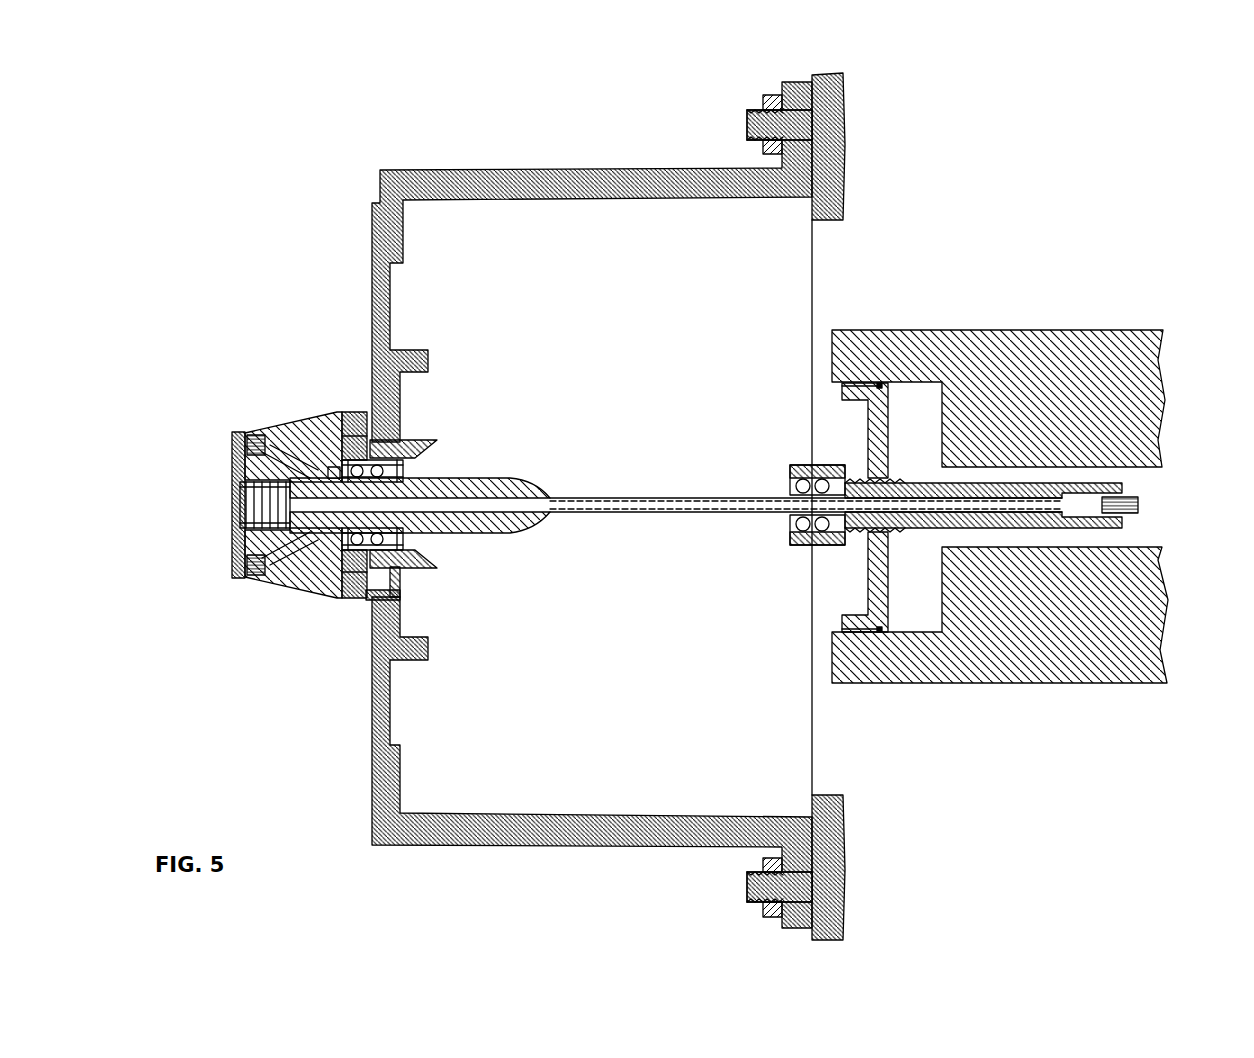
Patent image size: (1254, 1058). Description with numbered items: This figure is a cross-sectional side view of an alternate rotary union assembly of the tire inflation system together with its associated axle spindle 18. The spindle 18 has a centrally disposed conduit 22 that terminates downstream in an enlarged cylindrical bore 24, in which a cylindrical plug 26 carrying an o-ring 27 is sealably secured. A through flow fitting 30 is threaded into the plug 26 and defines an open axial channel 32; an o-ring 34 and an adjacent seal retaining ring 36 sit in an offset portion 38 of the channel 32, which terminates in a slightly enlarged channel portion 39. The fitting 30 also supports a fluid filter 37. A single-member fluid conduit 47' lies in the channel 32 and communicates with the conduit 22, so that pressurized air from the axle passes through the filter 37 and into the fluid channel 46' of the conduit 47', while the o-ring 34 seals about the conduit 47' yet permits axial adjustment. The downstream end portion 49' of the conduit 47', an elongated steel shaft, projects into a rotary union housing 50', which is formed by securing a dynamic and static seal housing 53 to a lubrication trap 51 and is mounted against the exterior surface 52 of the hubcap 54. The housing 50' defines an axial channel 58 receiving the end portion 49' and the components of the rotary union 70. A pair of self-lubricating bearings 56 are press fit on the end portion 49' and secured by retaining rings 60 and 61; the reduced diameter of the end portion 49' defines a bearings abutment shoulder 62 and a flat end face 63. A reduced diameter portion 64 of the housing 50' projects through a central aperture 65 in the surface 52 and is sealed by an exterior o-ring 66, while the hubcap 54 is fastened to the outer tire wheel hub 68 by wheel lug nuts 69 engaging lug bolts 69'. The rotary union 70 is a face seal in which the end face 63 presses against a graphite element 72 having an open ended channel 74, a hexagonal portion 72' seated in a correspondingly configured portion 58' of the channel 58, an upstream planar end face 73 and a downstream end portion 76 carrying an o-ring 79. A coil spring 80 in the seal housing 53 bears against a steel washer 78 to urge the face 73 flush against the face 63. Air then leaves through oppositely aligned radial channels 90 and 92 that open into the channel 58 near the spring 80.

The axle spindle 18 is at (1092, 345).
The conduit 22 is at (1063, 540).
The cylindrical bore 24 is at (935, 410).
The cylindrical plug 26 is at (890, 408).
The o-ring 27 is at (879, 383).
The through flow fitting 30 is at (840, 485).
The axial channel 32 is at (1087, 522).
The o-ring 34 is at (815, 465).
The seal retaining ring 36 is at (840, 515).
The fluid filter 37 is at (1140, 508).
The offset portion 38 is at (800, 512).
The enlarged channel portion 39 is at (845, 500).
The fluid channel 46' is at (806, 529).
The fluid conduit 47' is at (806, 477).
The downstream end portion 49' is at (420, 483).
The rotary union housing 50' is at (285, 316).
The lubrication trap 51 is at (430, 460).
The exterior surface 52 is at (372, 240).
The dynamic and static seal housing 53 is at (286, 448).
The hubcap 54 is at (522, 180).
The bearings 56 is at (405, 440).
The channel 58 is at (416, 415).
The correspondingly configured portion 58' is at (344, 581).
The retaining ring 60 is at (415, 570).
The retaining ring 61 is at (362, 592).
The bearings abutment shoulder 62 is at (430, 497).
The end face 63 is at (322, 545).
The reduced diameter portion 64 is at (378, 597).
The aperture 65 is at (400, 568).
The exterior o-ring 66 is at (402, 580).
The outer tire wheel hub 68 is at (845, 110).
The wheel lug nuts 69 is at (754, 480).
The lug bolts 69' is at (717, 500).
The rotary union 70 is at (334, 466).
The graphite element 72 is at (285, 455).
The hexagonal portion 72' is at (316, 417).
The upstream planar end face 73 is at (315, 585).
The open ended channel 74 is at (262, 440).
The downstream end portion 76 is at (238, 470).
The steel washer 78 is at (300, 560).
The o-ring 79 is at (312, 548).
The coil spring 80 is at (240, 505).
The radial channel 90 is at (245, 578).
The radial channel 92 is at (256, 432).